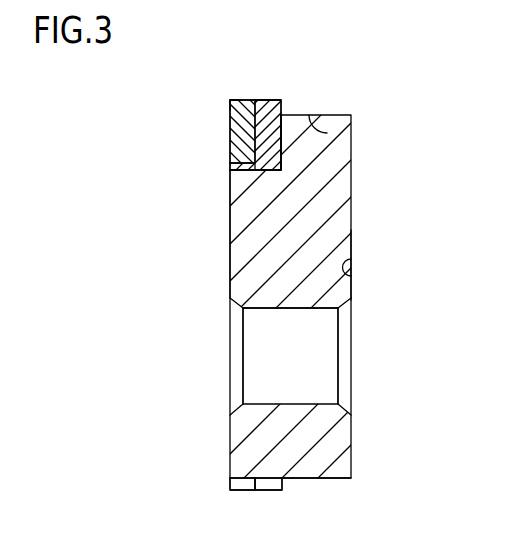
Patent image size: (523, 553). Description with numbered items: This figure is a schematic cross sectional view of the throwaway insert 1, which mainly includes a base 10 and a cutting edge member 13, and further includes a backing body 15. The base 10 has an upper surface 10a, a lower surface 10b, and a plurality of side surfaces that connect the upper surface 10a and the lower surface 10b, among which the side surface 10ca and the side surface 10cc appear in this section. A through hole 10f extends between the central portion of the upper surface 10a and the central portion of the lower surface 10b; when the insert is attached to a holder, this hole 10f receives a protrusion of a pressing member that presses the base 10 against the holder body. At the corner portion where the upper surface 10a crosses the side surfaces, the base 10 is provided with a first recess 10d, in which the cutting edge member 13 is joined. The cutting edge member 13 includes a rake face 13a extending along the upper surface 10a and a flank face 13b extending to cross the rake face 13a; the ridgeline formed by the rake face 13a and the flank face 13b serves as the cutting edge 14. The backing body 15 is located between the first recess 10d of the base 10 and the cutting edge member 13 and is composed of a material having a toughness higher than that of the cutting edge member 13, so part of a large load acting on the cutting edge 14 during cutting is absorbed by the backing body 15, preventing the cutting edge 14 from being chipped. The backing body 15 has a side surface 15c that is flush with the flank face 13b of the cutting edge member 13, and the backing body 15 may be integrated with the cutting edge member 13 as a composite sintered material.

The throwaway insert 1 is at (383, 84).
The base 10 is at (270, 237).
The upper surface 10a is at (231, 200).
The lower surface 10b is at (347, 272).
The side surface 10ca is at (327, 133).
The side surface 10cc is at (322, 478).
The first recess 10d is at (282, 148).
The through hole 10f is at (305, 309).
The cutting edge member 13 is at (245, 140).
The rake face 13a is at (240, 115).
The flank face 13b is at (243, 100).
The cutting edge 14 is at (233, 102).
The backing body 15 is at (268, 165).
The side surface 15c is at (272, 100).